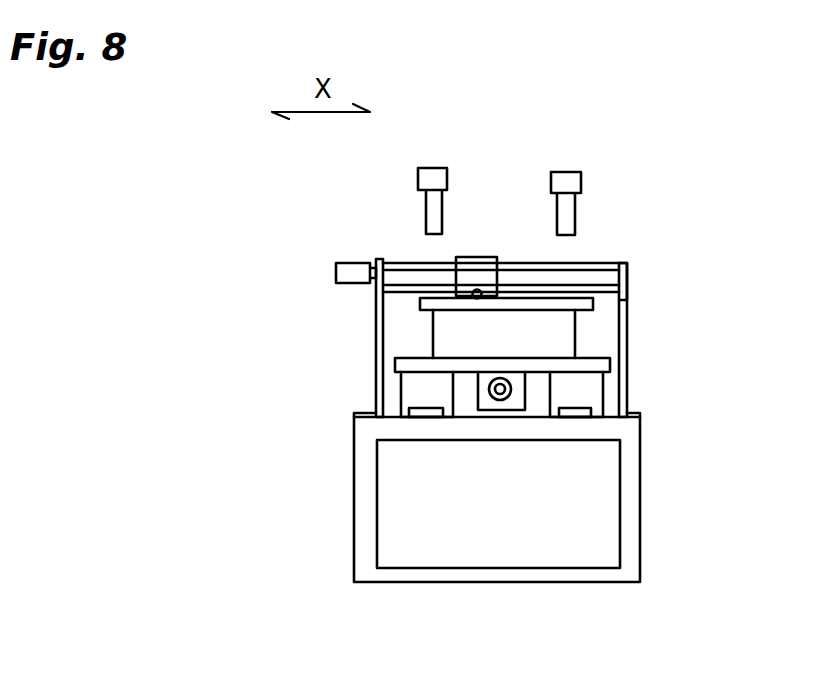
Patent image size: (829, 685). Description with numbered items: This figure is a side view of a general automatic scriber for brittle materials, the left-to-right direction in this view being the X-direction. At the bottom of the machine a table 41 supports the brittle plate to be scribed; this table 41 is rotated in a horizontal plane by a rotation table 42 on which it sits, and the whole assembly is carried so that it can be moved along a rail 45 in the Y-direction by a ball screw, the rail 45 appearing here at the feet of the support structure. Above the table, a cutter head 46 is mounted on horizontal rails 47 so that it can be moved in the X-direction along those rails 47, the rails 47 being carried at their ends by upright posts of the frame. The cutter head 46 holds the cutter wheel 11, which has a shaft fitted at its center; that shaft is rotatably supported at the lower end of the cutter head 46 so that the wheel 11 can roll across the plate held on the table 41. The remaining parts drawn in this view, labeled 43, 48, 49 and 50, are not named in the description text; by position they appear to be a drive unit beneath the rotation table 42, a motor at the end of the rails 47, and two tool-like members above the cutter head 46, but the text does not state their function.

The cutter wheel 11 is at (476, 289).
The table 41 is at (420, 302).
The rotation table 42 is at (575, 339).
The rotary drive unit 43 is at (500, 378).
The rail 45 is at (430, 417).
The cutter head 46 is at (497, 257).
The rails 47 is at (606, 298).
The drive motor 48 is at (335, 268).
The tool 49 is at (433, 168).
The tool 50 is at (563, 172).